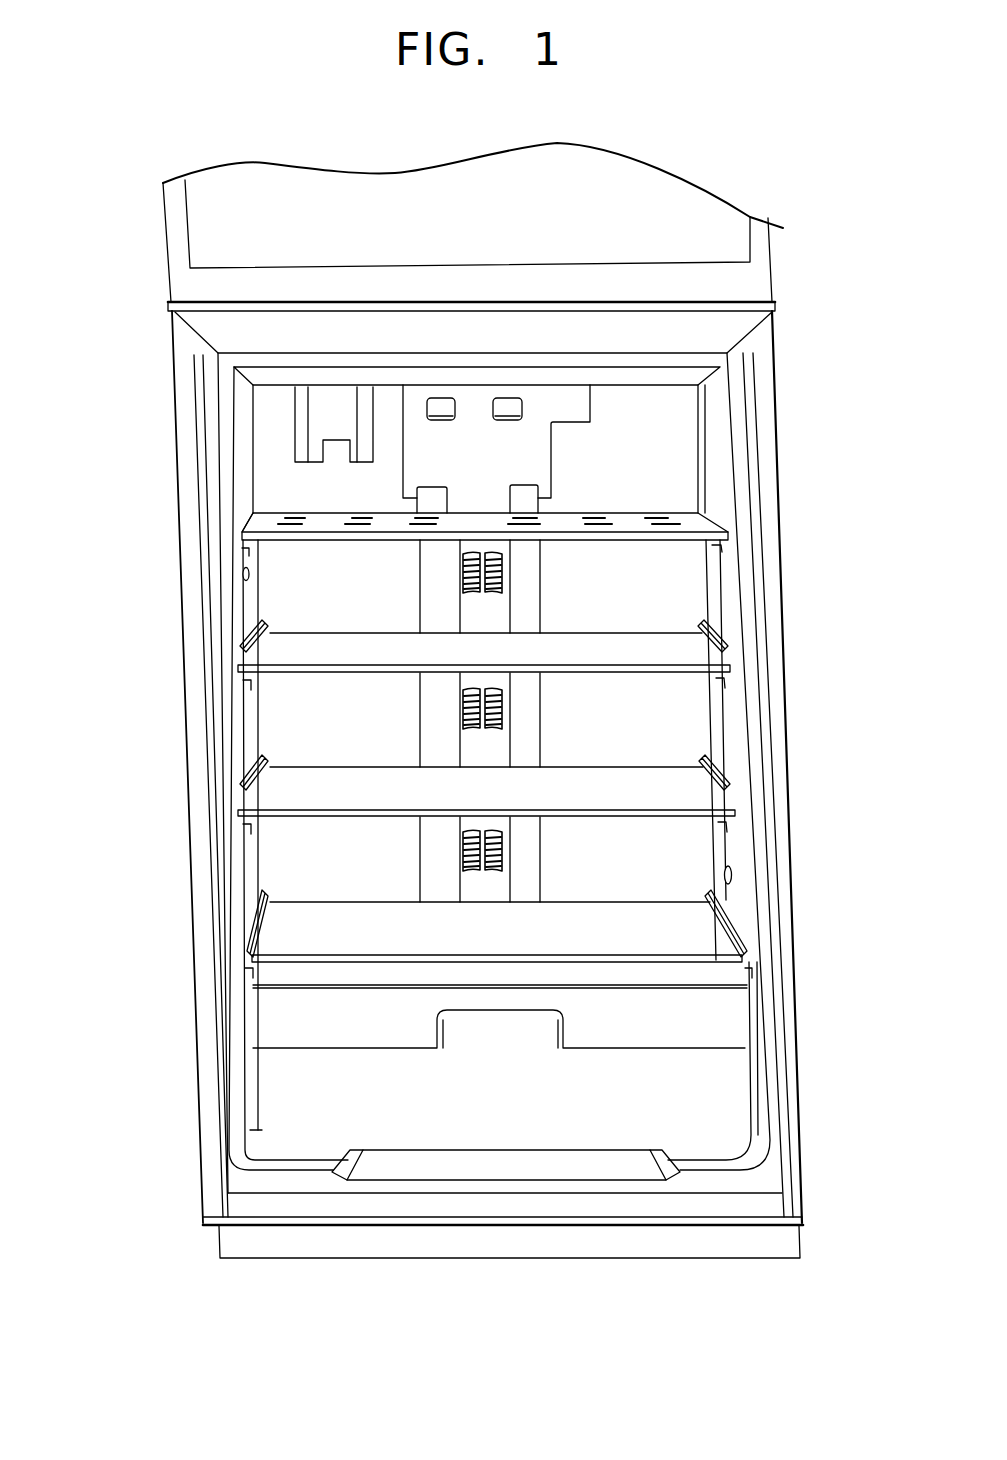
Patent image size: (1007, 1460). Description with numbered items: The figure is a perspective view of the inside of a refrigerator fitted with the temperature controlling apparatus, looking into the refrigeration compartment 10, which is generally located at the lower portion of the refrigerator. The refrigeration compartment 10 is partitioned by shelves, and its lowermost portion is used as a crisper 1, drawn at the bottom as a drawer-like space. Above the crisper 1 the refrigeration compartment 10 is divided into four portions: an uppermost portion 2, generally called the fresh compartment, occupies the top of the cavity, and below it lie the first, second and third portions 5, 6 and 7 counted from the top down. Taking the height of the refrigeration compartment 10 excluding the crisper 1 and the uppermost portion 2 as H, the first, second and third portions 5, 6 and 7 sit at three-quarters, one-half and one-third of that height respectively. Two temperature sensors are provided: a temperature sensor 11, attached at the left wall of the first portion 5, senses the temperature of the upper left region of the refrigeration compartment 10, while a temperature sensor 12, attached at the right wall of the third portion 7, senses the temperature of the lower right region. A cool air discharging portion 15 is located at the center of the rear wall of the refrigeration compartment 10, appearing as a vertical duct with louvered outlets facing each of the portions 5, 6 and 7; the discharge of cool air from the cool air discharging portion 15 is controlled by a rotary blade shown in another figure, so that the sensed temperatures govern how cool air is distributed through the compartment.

The crisper 1 is at (727, 1110).
The uppermost portion 2 is at (687, 455).
The first portion 5 is at (693, 612).
The second portion 6 is at (702, 728).
The third portion 7 is at (692, 848).
The refrigeration compartment 10 is at (170, 460).
The temperature sensor 11 is at (238, 577).
The temperature sensor 12 is at (732, 878).
The cool air discharging portion 15 is at (497, 608).